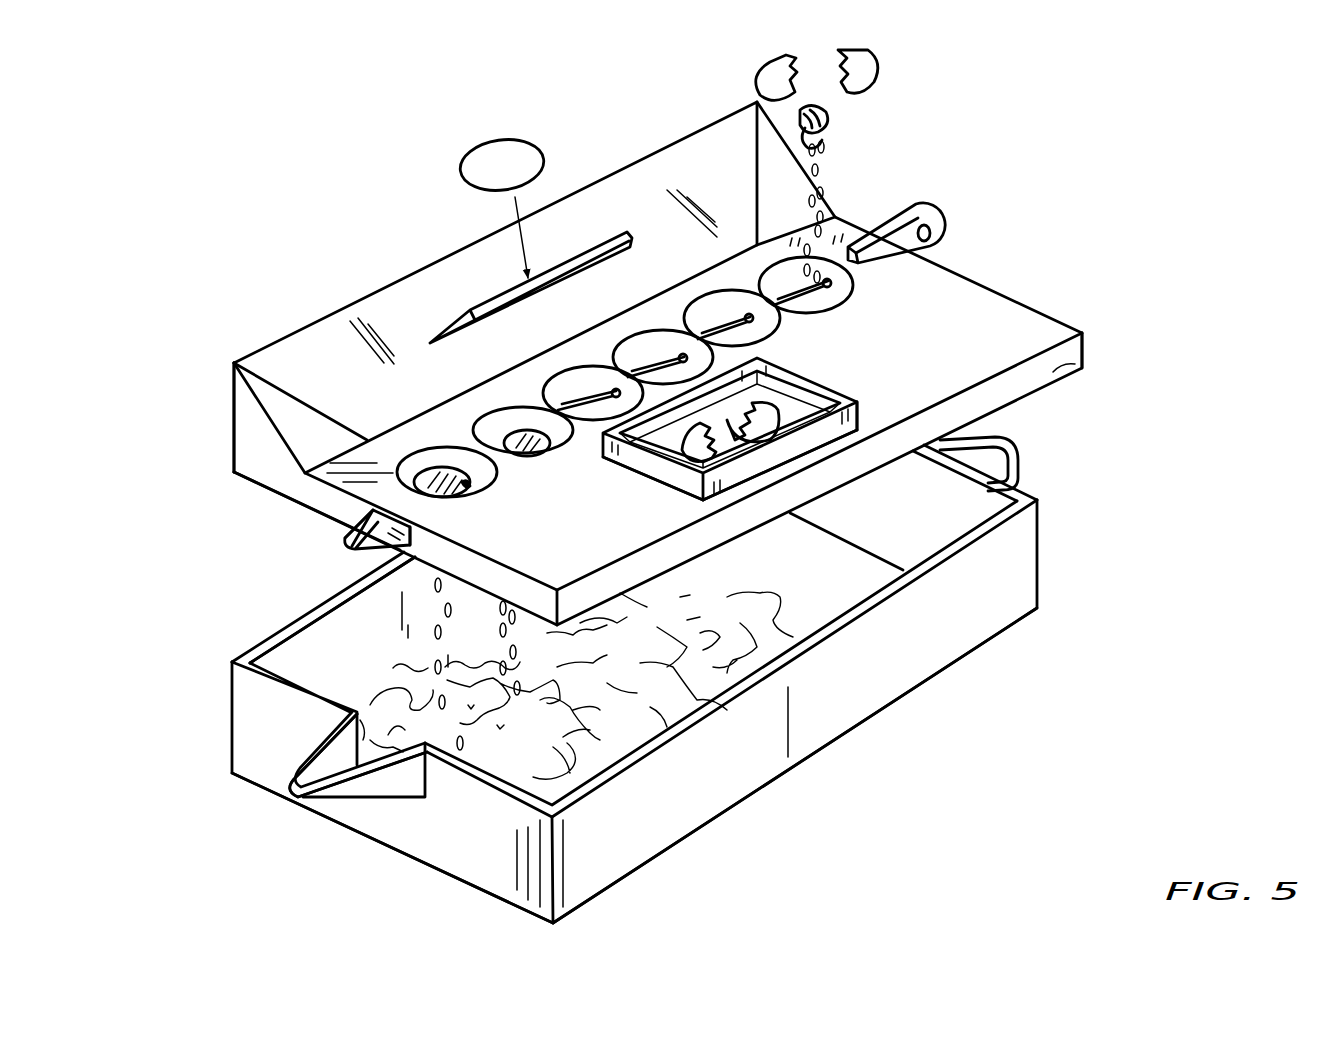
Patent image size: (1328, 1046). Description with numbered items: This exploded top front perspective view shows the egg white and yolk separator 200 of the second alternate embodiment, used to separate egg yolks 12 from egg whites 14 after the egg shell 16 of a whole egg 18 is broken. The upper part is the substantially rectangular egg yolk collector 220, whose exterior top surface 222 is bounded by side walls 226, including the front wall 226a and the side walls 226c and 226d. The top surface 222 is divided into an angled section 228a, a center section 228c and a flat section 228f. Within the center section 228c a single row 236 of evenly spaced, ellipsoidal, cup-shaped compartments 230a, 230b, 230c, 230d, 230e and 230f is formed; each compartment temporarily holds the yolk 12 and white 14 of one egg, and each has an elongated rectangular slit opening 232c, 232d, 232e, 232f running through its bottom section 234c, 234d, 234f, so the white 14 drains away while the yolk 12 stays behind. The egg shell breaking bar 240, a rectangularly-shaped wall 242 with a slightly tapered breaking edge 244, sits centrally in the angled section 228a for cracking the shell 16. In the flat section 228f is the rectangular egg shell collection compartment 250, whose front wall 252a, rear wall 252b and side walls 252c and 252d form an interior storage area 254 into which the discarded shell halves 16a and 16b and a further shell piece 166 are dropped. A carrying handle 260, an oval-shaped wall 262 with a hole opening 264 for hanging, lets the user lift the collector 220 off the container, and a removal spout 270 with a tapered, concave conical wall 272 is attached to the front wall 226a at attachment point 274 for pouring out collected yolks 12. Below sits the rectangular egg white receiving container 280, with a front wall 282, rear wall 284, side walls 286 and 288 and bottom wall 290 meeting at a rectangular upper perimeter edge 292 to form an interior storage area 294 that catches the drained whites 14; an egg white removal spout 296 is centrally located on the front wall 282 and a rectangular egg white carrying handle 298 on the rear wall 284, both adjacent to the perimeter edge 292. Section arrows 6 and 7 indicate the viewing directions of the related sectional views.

The egg white and yolk separator 200 is at (298, 267).
The section line 6 is at (418, 253).
The section line 7 is at (968, 183).
The egg yolk 12 is at (433, 485).
The egg white 14 is at (476, 470).
The egg shell 16 is at (482, 158).
The egg shell half 16a is at (778, 73).
The egg shell half 16b is at (855, 63).
The whole egg 18 is at (508, 160).
The eggshell fragment 166 is at (786, 396).
The egg yolk collector 220 is at (1062, 318).
The upper surface 222 is at (950, 312).
The side walls 226 is at (1099, 353).
The front wall 226a is at (300, 483).
The side wall 226c is at (233, 395).
The side wall 226d is at (1084, 369).
The angled section 228a is at (603, 310).
The center section 228c is at (593, 427).
The flat section 228f is at (878, 392).
The cup-shaped compartment 230a is at (476, 436).
The cup-shaped compartment 230b is at (490, 393).
The cup-shaped compartment 230c is at (624, 391).
The cup-shaped compartment 230d is at (686, 356).
The cup-shaped compartment 230e is at (758, 316).
The cup-shaped compartment 230f is at (767, 286).
The slit opening 232c is at (578, 385).
The slit opening 232d is at (700, 345).
The slit opening 232e is at (778, 320).
The slit opening 232f is at (853, 291).
The bottom section 234c is at (548, 402).
The bottom section 234d is at (632, 368).
The bottom section 234f is at (828, 300).
The row of compartments 236 is at (815, 250).
The egg shell breaking bar 240 is at (588, 243).
The rectangularly-shaped wall 242 is at (493, 315).
The breaking edge 244 is at (541, 280).
The egg shell collection compartment 250 is at (789, 361).
The front wall 252a is at (682, 483).
The rear wall 252b is at (845, 392).
The side wall 252c is at (668, 421).
The side wall 252d is at (762, 457).
The interior storage area 254 is at (802, 403).
The carrying handle 260 is at (936, 206).
The oval-shaped wall 262 is at (938, 251).
The hole opening 264 is at (945, 225).
The removal spout 270 is at (395, 534).
The conical wall 272 is at (350, 514).
The attachment point 274 is at (440, 532).
The egg white receiving container 280 is at (400, 864).
The front wall 282 is at (397, 818).
The rear wall 284 is at (842, 523).
The side wall 286 is at (368, 600).
The side wall 288 is at (617, 852).
The bottom wall 290 is at (813, 592).
The upper perimeter edge 292 is at (333, 598).
The interior storage area 294 is at (775, 568).
The egg white removal spout 296 is at (323, 800).
The egg white carrying handle 298 is at (968, 420).